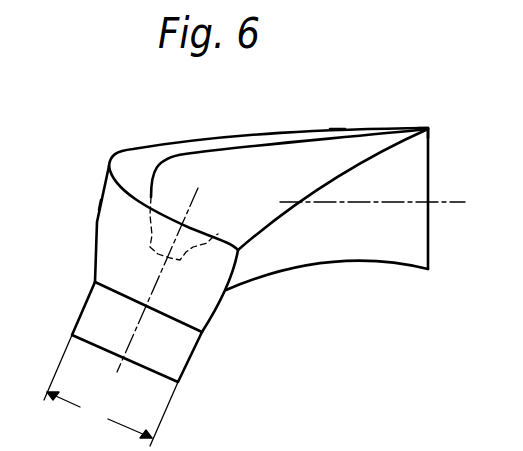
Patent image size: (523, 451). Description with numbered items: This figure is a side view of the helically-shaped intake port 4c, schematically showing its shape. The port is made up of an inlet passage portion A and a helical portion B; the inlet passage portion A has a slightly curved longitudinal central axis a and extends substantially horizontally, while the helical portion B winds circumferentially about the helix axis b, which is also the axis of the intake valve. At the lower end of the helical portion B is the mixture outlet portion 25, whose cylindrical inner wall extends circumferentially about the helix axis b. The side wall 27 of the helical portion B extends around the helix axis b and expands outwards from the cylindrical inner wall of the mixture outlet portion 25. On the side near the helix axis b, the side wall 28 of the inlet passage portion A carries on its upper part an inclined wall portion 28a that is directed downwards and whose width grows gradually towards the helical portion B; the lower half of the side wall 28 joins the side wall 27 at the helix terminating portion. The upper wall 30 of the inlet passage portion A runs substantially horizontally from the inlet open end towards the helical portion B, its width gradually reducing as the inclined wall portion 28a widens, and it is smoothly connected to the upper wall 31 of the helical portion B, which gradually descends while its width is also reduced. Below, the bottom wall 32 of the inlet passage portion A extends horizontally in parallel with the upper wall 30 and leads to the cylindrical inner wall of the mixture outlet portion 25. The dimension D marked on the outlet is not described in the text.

The mixture outlet portion 25 is at (175, 360).
The side wall of the helical portion 27 is at (108, 226).
The side wall of the inlet passage portion 28 is at (330, 253).
The inclined wall portion 28a is at (378, 143).
The upper wall of the inlet passage portion 30 is at (308, 128).
The upper wall of the helical portion 31 is at (137, 160).
The bottom wall of the inlet passage portion 32 is at (403, 266).
The helically-shaped intake port 4c is at (429, 128).
The inlet passage portion A is at (337, 128).
The helical portion B is at (98, 188).
The longitudinal central axis of the inlet passage portion a is at (460, 202).
The helix axis b is at (117, 372).
The dimension D is at (111, 390).